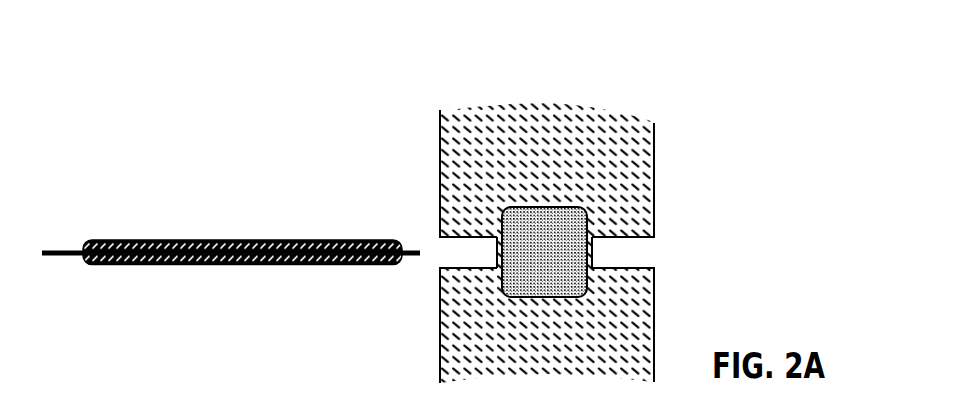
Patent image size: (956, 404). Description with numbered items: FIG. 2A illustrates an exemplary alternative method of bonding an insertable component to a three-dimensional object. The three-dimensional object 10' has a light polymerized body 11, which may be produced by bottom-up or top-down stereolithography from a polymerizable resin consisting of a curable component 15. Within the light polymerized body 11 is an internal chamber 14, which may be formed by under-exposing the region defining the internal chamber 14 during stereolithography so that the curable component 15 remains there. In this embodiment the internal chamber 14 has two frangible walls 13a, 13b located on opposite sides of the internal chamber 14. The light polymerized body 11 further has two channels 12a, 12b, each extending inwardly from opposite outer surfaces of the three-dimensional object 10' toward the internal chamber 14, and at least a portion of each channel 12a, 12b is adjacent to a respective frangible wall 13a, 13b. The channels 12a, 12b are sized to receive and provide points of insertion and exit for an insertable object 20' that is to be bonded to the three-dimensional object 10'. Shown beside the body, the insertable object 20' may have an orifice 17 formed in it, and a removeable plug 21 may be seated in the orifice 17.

The three-dimensional object 10' is at (571, 198).
The light polymerized body 11 is at (495, 178).
The channel 12a is at (453, 253).
The channel 12b is at (657, 255).
The frangible wall 13a is at (505, 250).
The frangible wall 13b is at (594, 234).
The internal chamber 14 is at (588, 286).
The curable component 15 is at (528, 280).
The orifice 17 is at (163, 240).
The insertable object 20' is at (231, 260).
The removeable plug 21 is at (60, 250).